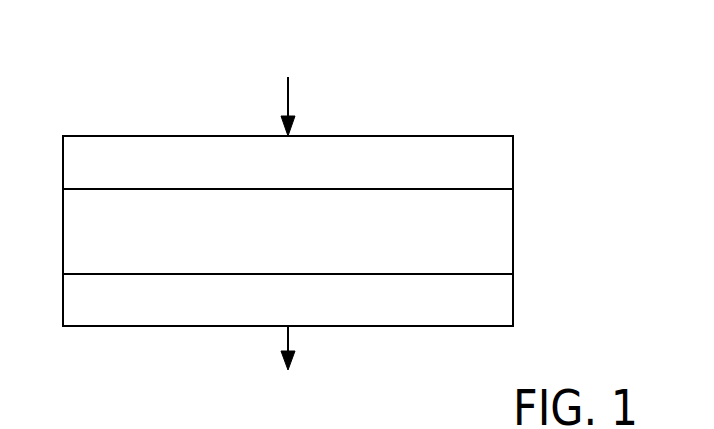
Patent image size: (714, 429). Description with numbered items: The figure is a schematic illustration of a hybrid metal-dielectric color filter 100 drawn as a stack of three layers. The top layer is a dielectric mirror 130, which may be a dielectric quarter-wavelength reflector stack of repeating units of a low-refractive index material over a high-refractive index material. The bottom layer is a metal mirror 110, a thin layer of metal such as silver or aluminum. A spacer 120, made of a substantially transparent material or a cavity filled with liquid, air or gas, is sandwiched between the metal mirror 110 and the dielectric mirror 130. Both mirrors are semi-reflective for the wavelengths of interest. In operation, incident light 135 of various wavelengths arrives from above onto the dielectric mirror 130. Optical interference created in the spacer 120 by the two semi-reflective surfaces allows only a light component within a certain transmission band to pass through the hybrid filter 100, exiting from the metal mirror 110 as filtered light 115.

The hybrid metal-dielectric color filter 100 is at (441, 76).
The metal mirror 110 is at (288, 300).
The spacer 120 is at (288, 231).
The dielectric mirror 130 is at (288, 162).
The incident light 135 is at (291, 75).
The filtered light 115 is at (287, 377).